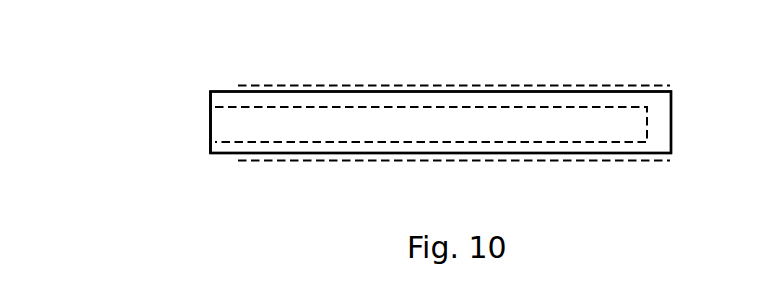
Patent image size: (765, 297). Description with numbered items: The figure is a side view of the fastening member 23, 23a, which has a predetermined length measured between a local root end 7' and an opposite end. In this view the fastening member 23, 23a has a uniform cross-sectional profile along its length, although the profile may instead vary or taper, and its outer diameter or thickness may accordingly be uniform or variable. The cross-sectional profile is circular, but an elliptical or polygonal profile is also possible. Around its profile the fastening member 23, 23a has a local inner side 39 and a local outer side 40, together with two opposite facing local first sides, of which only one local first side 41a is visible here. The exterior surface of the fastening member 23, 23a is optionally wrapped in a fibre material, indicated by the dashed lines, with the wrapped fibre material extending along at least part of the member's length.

The fastening member 23 is at (150, 82).
The fastening member 23a is at (441, 123).
The local root end 7' is at (169, 153).
The local inner side 39 is at (407, 87).
The local outer side 40 is at (279, 153).
The local first side 41a is at (528, 127).